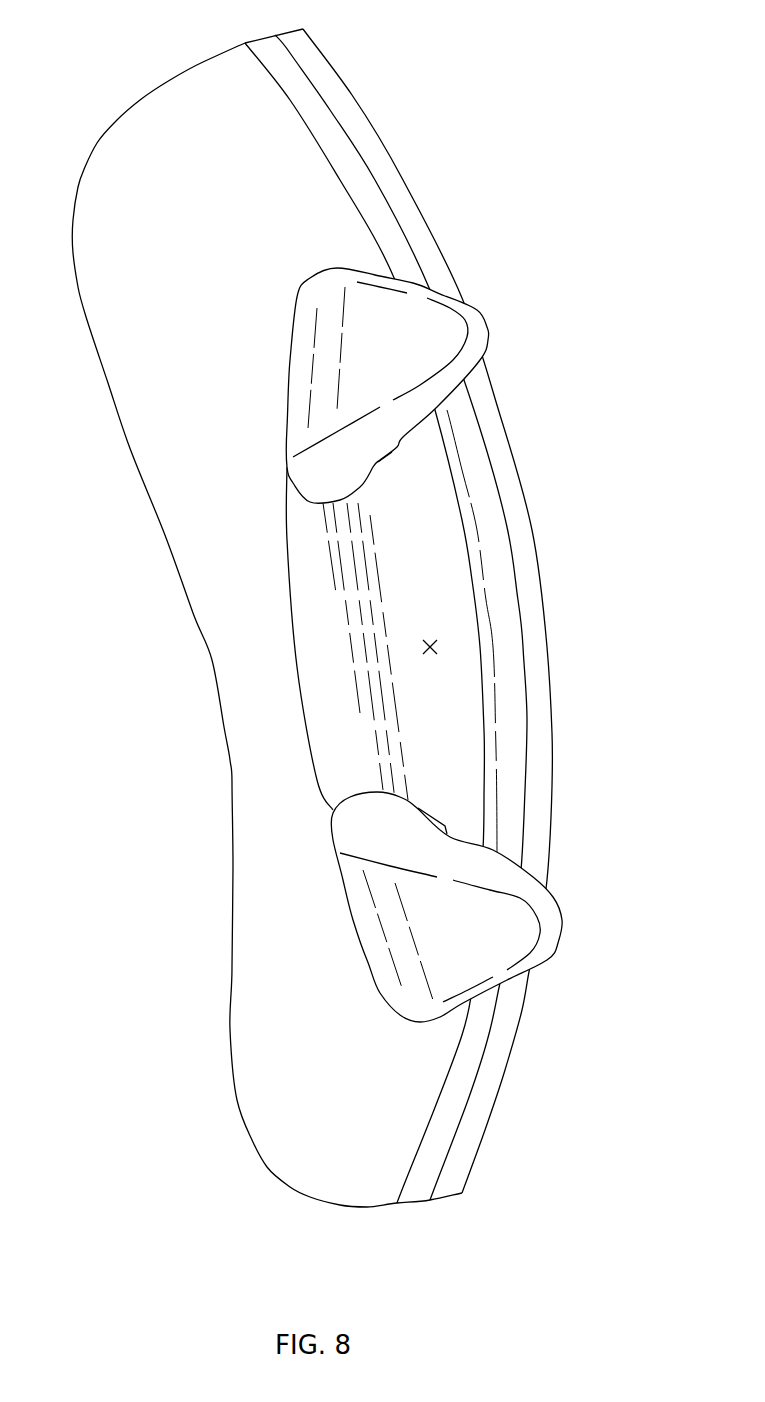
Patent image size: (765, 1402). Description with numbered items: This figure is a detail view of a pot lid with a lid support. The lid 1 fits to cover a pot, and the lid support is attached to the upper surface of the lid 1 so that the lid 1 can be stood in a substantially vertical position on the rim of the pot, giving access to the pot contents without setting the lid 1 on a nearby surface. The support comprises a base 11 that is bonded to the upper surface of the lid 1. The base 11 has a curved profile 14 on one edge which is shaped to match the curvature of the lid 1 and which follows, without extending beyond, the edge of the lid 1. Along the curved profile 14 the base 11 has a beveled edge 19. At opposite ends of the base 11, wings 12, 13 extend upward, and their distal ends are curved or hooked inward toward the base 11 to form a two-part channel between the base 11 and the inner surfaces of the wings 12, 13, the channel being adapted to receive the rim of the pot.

The lid 1 is at (297, 143).
The base 11 is at (437, 646).
The wing 12 is at (543, 917).
The wing 13 is at (473, 328).
The curved profile 14 is at (468, 552).
The beveled edge 19 is at (472, 732).